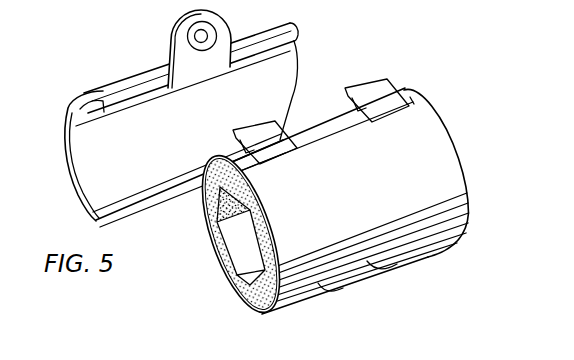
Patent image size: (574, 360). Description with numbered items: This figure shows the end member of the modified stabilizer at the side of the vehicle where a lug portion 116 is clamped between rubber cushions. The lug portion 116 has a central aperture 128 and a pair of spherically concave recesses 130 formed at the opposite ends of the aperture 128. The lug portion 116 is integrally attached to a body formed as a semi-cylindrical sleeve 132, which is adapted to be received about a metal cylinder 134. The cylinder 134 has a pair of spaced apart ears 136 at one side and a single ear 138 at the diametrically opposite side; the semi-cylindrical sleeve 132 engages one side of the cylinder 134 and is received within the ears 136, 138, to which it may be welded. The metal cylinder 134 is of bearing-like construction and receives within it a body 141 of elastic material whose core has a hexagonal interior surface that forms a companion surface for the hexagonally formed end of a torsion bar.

The lug portion 116 is at (227, 33).
The central aperture 128 is at (196, 34).
The spherically concave recesses 130 is at (190, 44).
The semi-cylindrical sleeve 132 is at (72, 150).
The metal cylinder 134 is at (287, 296).
The spaced apart ears 136 is at (363, 86).
The single ear 138 is at (343, 282).
The body of elastic material 141 is at (256, 297).